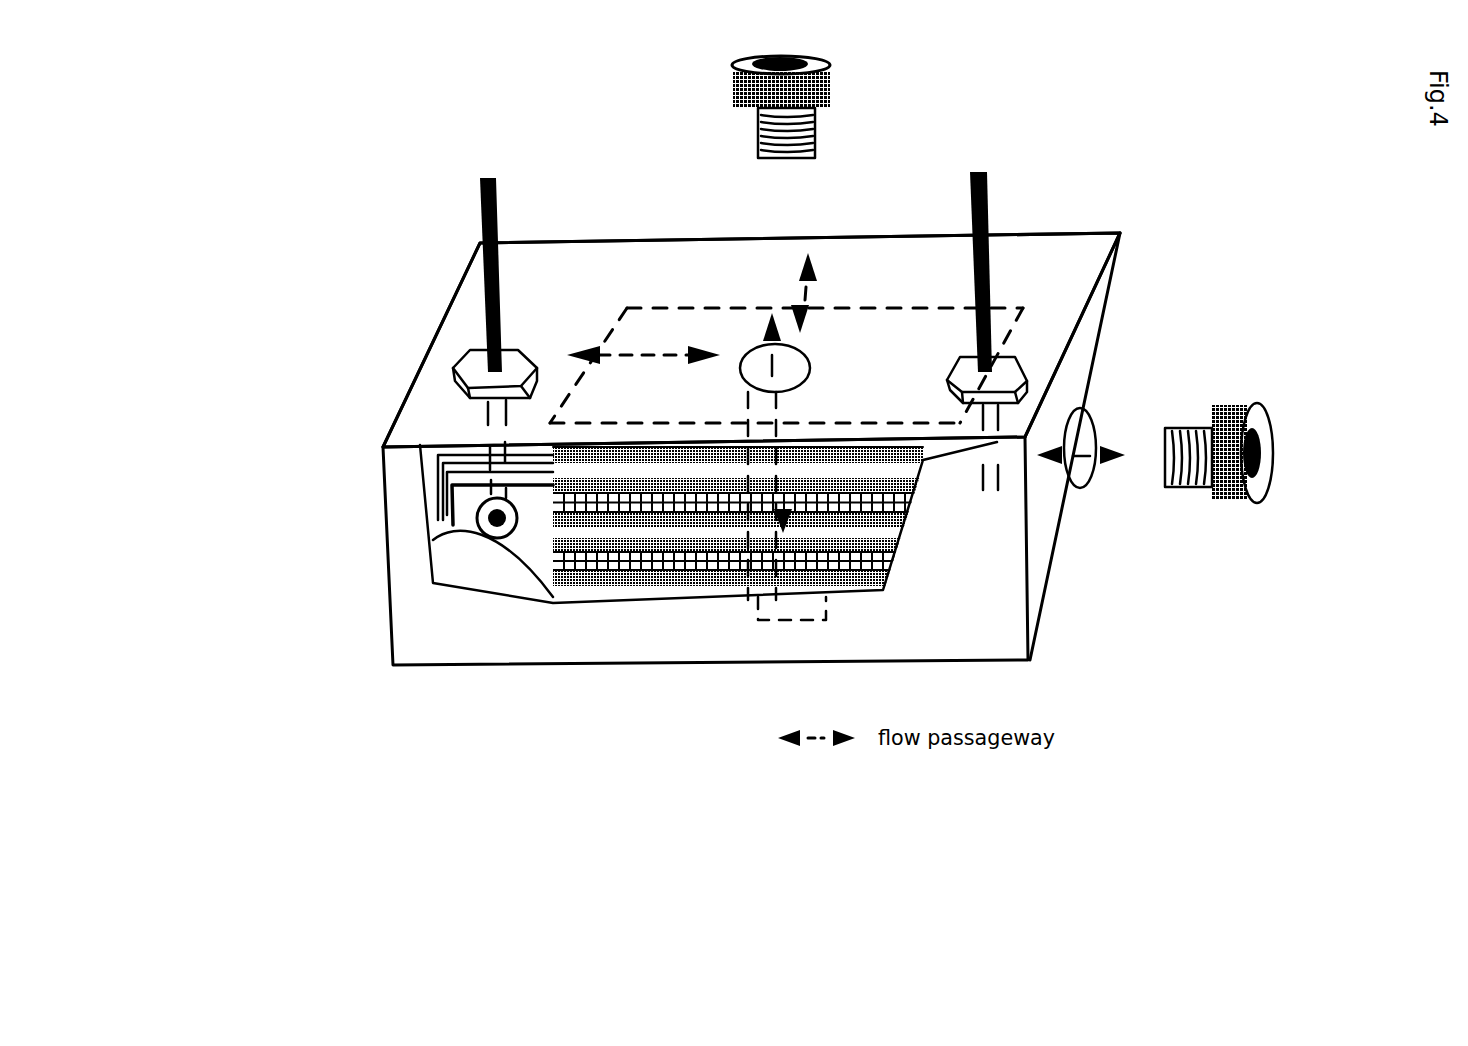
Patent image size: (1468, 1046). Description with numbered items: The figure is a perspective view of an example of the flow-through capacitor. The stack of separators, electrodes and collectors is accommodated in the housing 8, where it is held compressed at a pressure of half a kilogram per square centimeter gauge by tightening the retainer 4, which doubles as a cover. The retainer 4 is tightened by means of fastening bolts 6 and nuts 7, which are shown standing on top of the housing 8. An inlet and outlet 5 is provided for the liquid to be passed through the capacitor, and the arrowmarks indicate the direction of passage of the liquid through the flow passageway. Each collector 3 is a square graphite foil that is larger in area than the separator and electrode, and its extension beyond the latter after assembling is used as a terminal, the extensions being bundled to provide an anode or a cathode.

The collector 3 is at (466, 513).
The retainer 4 is at (573, 262).
The inlet and outlet 5 is at (755, 348).
The fastening bolt 6 is at (483, 222).
The nut 7 is at (470, 358).
The housing 8 is at (545, 648).